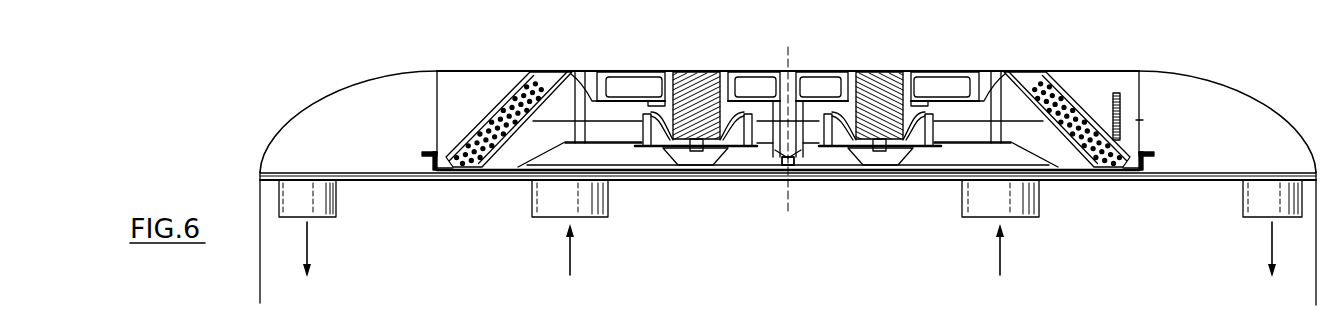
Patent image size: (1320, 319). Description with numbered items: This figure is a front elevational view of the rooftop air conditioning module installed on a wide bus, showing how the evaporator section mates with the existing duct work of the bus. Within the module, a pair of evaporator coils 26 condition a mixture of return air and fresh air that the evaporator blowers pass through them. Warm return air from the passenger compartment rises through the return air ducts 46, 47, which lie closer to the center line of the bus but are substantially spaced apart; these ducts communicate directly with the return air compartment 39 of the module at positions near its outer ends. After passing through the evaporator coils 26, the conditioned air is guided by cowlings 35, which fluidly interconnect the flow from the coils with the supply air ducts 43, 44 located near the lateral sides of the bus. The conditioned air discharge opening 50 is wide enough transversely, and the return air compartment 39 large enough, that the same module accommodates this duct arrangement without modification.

The evaporator coil 26 is at (1062, 103).
The cowling 35 is at (1263, 103).
The return air compartment 39 is at (935, 161).
The supply air duct 43 is at (318, 205).
The supply air duct 44 is at (1257, 208).
The return air duct 46 is at (590, 205).
The return air duct 47 is at (1020, 205).
The conditioned air discharge opening 50 is at (1182, 194).